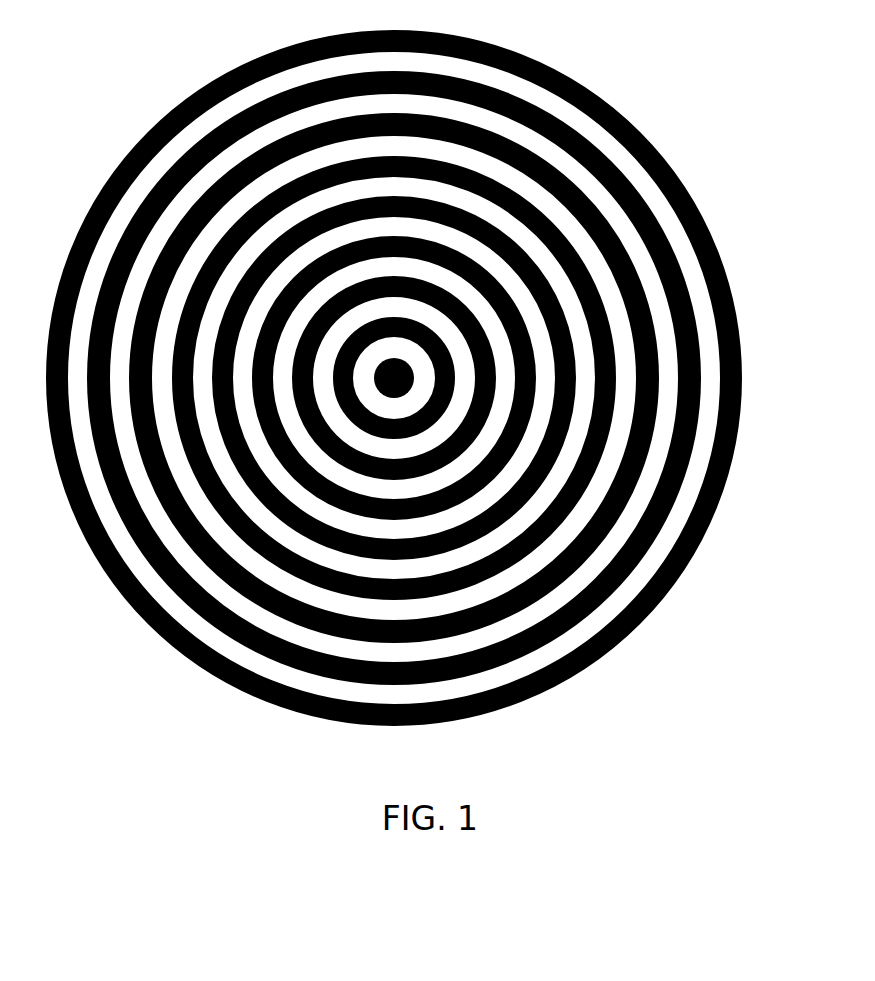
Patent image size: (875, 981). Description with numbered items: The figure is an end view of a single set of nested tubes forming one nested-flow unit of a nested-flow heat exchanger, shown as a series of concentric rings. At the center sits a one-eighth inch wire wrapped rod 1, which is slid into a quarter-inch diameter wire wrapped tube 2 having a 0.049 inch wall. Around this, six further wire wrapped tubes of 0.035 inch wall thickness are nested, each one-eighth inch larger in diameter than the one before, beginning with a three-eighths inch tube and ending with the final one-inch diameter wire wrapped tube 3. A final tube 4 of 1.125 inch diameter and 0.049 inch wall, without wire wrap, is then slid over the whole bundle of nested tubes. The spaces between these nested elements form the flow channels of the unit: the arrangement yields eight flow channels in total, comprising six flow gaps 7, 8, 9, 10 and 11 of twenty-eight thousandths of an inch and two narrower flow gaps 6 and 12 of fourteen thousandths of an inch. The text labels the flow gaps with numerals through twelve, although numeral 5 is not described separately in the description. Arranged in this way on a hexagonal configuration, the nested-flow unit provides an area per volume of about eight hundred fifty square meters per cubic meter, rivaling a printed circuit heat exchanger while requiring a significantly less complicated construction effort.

The center wire wrapped rod 1 is at (401, 344).
The wire wrapped tube 2 is at (455, 335).
The final wire wrapped tube 3 is at (652, 192).
The outer tube without wire wrap 4 is at (712, 210).
The annular zone 5 is at (411, 393).
The flow gap 6 is at (421, 437).
The flow gap 7 is at (427, 480).
The flow gap 8 is at (434, 521).
The flow gap 9 is at (441, 559).
The flow gap 10 is at (447, 601).
The flow gap 11 is at (456, 641).
The flow gap 12 is at (463, 681).